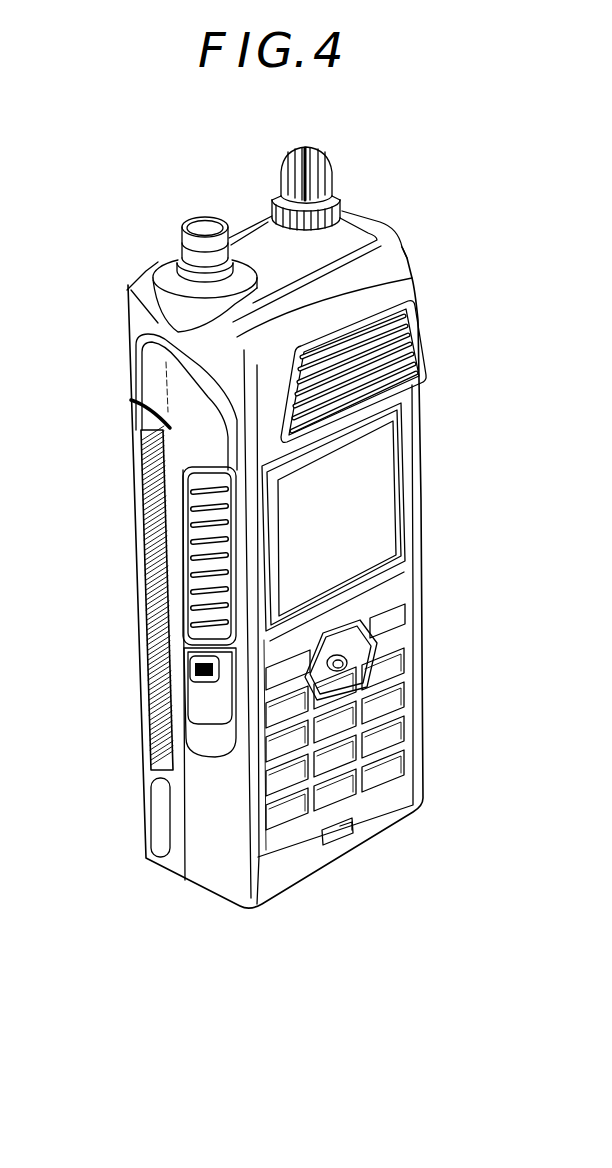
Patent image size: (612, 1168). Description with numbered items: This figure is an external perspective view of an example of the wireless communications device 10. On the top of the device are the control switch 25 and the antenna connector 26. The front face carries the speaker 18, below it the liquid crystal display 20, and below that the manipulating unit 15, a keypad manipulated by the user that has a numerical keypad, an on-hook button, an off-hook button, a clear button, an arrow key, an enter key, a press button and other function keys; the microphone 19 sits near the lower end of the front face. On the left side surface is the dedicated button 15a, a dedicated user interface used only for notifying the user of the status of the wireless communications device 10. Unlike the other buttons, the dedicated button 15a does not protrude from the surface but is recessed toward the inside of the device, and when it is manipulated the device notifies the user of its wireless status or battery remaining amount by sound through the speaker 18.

The wireless communications device 10 is at (238, 912).
The manipulating unit 15 is at (200, 570).
The dedicated button 15a is at (197, 670).
The speaker 18 is at (403, 322).
The microphone 19 is at (352, 833).
The liquid crystal display 20 is at (385, 530).
The control switch 25 is at (333, 170).
The antenna connector 26 is at (192, 215).